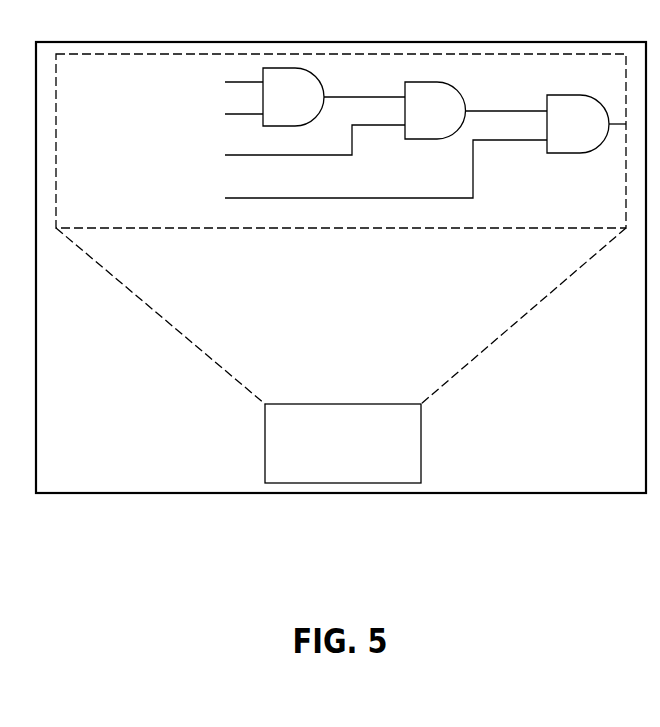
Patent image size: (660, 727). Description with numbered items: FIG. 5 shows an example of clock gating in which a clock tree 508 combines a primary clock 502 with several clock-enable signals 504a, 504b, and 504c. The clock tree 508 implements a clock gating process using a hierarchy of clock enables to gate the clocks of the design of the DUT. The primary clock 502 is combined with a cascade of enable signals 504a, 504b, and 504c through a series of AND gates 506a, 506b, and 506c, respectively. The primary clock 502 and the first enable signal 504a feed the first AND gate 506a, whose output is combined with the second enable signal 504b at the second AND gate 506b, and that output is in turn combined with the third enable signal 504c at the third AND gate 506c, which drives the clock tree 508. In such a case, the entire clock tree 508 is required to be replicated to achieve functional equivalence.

The primary clock 502 is at (164, 79).
The clock-enable signal 504a is at (180, 116).
The clock-enable signal 504b is at (251, 145).
The clock-enable signal 504c is at (322, 173).
The AND gate 506a is at (334, 97).
The AND gate 506b is at (476, 110).
The AND gate 506c is at (586, 124).
The clock tree 508 is at (343, 443).